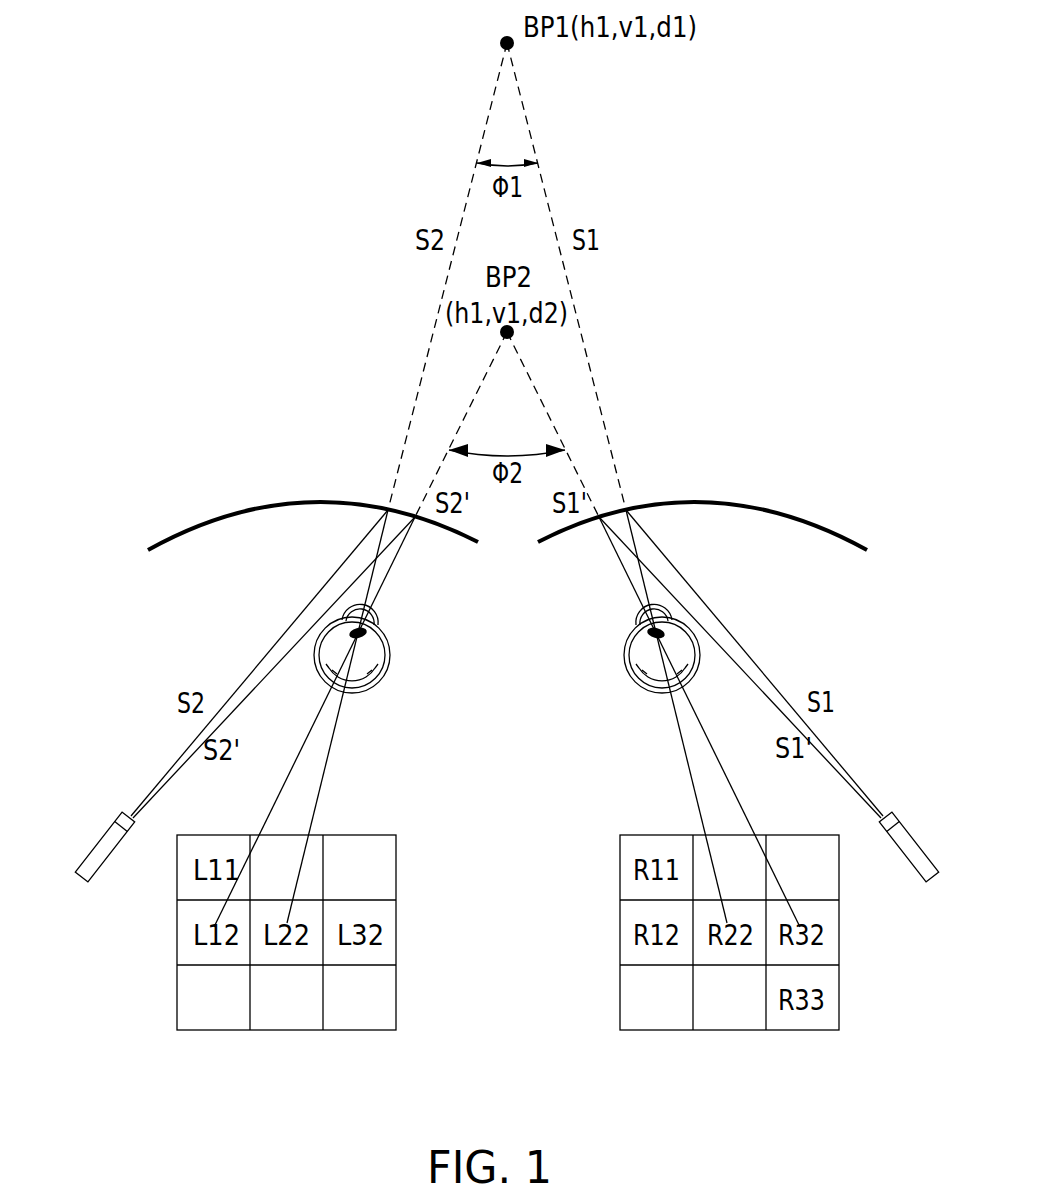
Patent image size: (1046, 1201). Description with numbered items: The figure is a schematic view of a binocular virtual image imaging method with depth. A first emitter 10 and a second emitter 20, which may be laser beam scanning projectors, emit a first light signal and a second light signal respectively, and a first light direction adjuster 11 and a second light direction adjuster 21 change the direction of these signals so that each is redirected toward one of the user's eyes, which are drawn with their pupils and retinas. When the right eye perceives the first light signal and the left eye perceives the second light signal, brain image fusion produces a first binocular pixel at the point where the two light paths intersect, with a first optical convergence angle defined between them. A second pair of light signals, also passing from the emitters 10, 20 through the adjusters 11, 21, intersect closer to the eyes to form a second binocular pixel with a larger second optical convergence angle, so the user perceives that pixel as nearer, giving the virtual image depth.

The first emitter 10 is at (920, 838).
The first light direction adjuster 11 is at (840, 535).
The second emitter 20 is at (97, 838).
The second light direction adjuster 21 is at (173, 535).